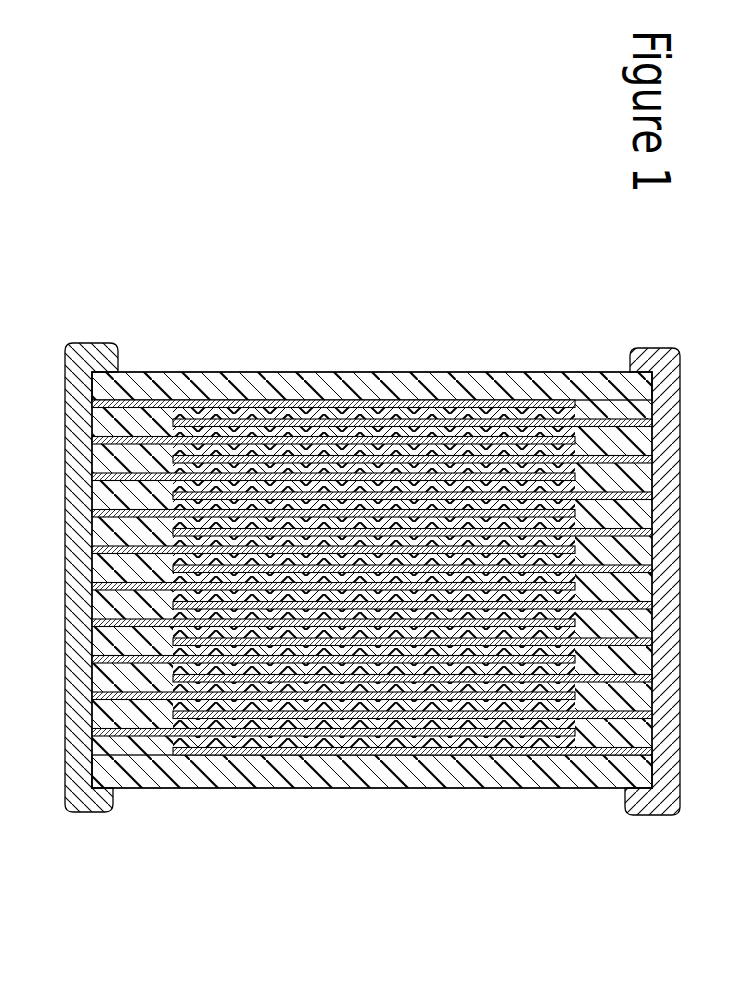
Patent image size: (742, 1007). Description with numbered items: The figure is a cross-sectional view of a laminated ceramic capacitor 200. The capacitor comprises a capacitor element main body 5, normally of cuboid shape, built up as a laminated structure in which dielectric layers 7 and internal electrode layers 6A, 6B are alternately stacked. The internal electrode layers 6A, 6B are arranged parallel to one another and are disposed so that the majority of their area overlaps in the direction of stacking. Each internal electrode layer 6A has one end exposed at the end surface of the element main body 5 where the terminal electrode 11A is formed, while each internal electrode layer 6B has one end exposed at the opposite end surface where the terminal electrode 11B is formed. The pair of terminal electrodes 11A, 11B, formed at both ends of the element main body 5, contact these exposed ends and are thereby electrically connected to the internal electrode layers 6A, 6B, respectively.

The laminated ceramic capacitor 200 is at (241, 850).
The capacitor element main body 5 is at (525, 790).
The internal electrode layer 6A is at (425, 372).
The internal electrode layer 6B is at (386, 788).
The dielectric layer 7 is at (282, 372).
The terminal electrode 11A is at (78, 815).
The terminal electrode 11B is at (657, 348).